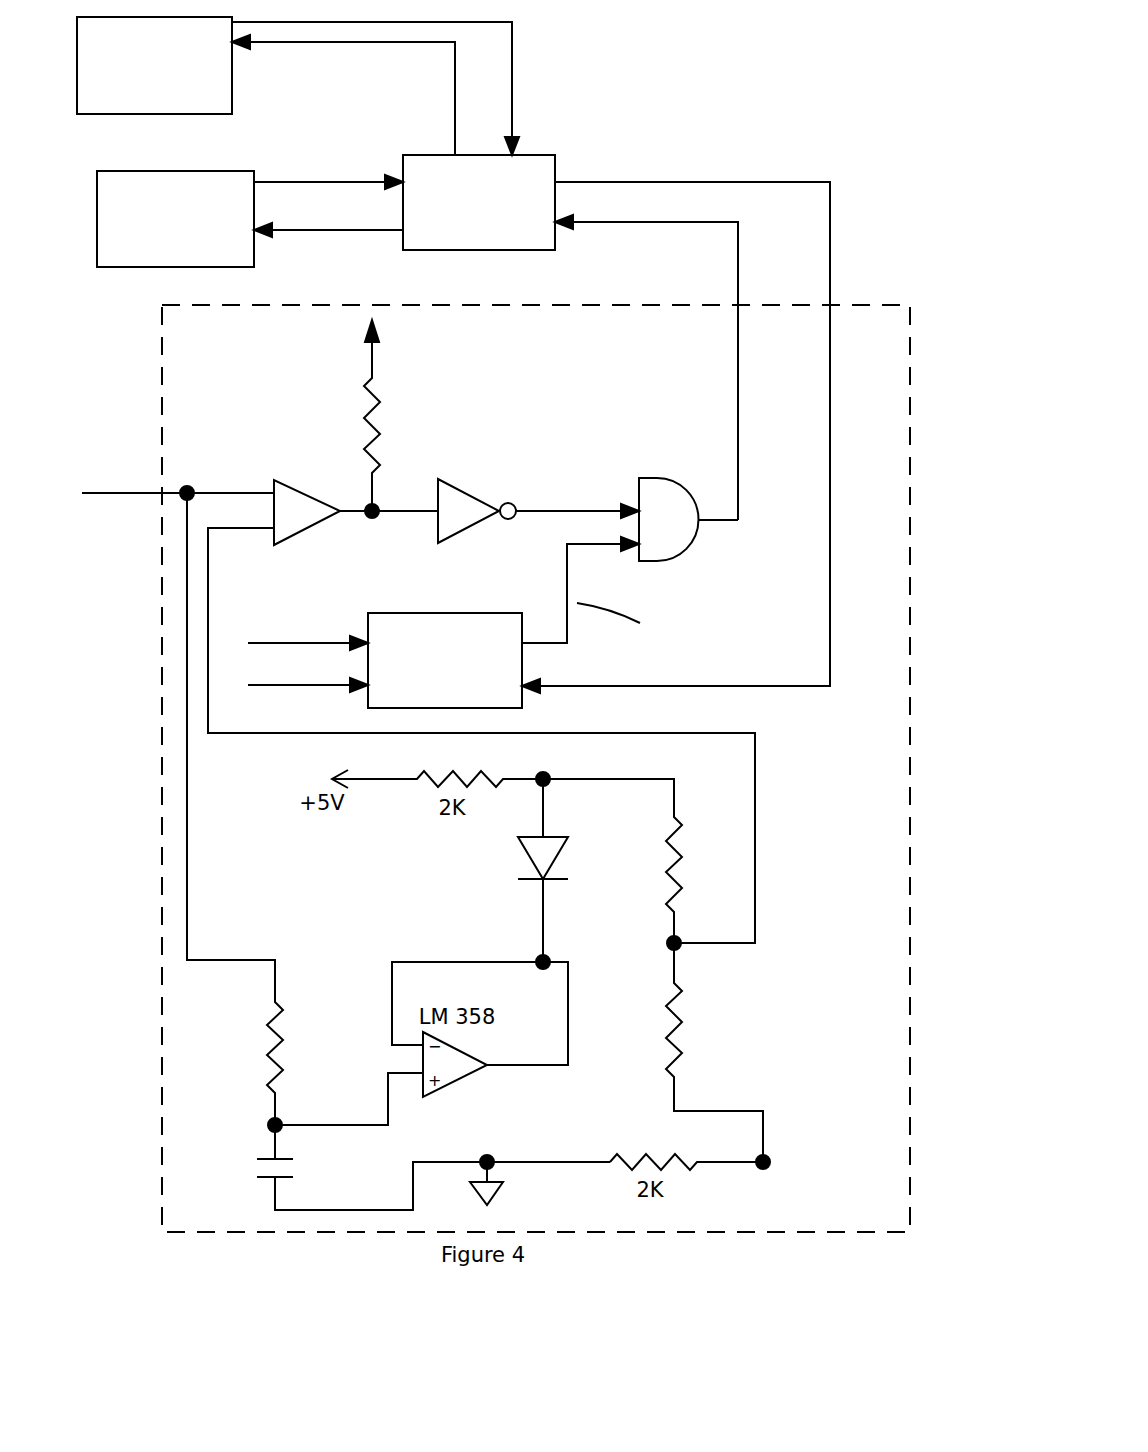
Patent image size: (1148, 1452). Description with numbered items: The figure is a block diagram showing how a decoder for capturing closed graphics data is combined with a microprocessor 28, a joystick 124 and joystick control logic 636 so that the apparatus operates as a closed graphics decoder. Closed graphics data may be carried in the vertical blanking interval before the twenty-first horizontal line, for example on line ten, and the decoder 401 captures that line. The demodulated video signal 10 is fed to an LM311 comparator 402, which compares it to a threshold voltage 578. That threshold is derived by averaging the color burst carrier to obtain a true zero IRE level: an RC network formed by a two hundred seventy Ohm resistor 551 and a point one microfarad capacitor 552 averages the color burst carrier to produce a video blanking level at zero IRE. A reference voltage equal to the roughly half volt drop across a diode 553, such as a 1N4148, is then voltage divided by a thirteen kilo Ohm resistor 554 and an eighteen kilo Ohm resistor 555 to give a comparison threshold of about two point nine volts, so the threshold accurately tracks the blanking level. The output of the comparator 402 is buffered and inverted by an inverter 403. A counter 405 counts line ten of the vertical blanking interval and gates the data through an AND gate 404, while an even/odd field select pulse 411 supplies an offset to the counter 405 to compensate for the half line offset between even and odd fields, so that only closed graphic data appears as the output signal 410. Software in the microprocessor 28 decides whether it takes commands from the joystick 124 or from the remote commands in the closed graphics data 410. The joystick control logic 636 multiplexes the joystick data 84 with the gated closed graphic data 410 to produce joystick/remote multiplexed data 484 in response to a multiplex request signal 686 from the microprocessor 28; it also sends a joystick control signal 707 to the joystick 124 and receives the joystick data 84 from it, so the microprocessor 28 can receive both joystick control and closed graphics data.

The demodulated video signal 10 is at (90, 502).
The microprocessor 28 is at (117, 120).
The joystick data 84 is at (272, 175).
The joystick 124 is at (137, 273).
The decoder 401 is at (877, 297).
The LM311 comparator 402 is at (322, 527).
The inverter 403 is at (487, 532).
The AND gate 404 is at (693, 550).
The counter 405 is at (418, 607).
The closed graphic data signal 410 is at (727, 373).
The even/odd field select pulse 411 is at (805, 170).
The joystick/remote multiplexed data 484 is at (450, 125).
The 270 Ohm resistor 551 is at (293, 1010).
The 0.1 microfarad capacitor 552 is at (242, 1175).
The diode 553 is at (530, 893).
The 13 Kilo Ohm resistor 554 is at (663, 873).
The 18 Kilo Ohm resistor 555 is at (703, 1007).
The threshold voltage 578 is at (763, 815).
The joystick control logic 636 is at (542, 153).
The multiplex request signal 686 is at (518, 115).
The joystick control signal 707 is at (293, 237).